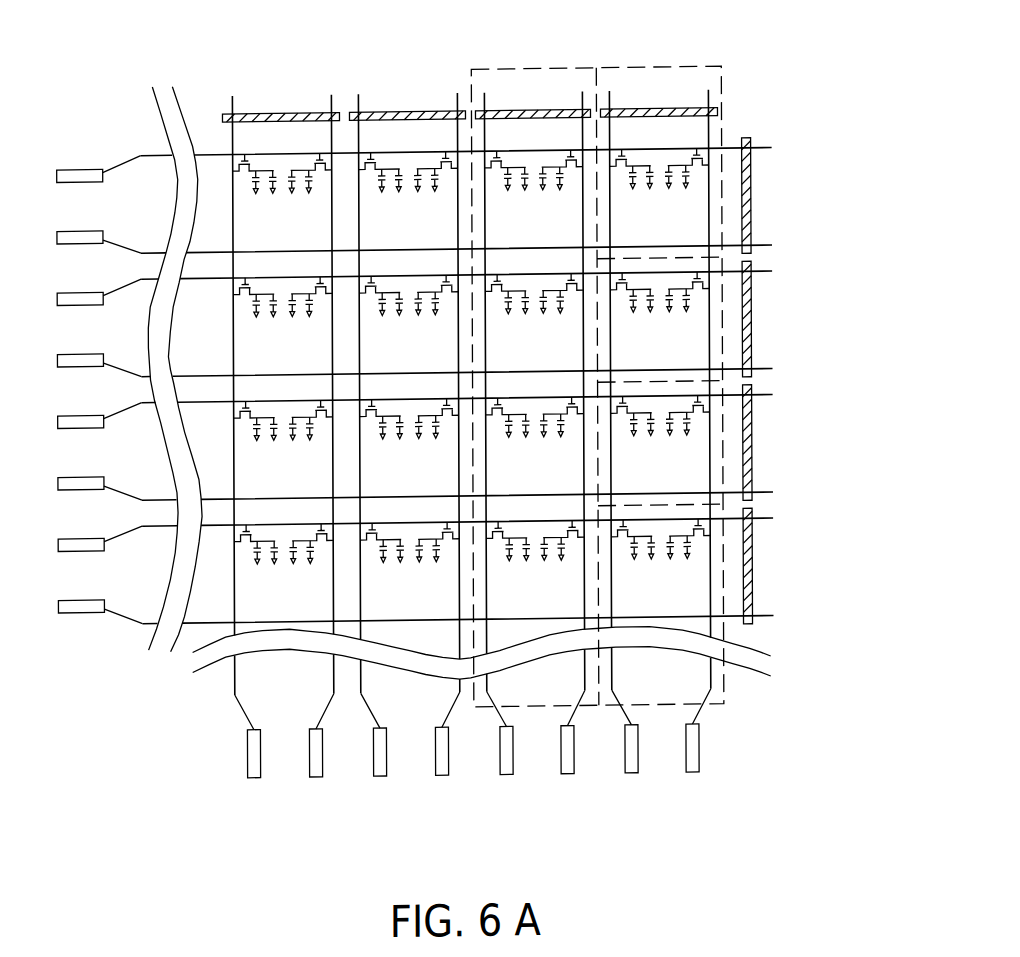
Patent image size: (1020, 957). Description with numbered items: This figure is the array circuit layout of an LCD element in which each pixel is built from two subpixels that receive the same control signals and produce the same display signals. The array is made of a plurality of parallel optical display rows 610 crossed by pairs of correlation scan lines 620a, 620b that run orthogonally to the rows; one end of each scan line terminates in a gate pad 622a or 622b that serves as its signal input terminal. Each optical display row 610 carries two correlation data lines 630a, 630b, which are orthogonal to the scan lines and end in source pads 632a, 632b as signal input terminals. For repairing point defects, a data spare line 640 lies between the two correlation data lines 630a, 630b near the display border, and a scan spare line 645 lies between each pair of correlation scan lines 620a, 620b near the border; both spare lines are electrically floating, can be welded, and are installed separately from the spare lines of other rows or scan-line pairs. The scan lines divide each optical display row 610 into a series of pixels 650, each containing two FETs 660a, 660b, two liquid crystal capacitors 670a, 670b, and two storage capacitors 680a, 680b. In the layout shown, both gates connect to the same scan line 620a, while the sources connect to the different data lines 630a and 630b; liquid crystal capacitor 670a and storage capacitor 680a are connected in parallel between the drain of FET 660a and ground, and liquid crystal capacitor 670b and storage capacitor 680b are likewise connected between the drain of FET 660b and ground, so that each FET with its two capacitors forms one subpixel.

The optical display row 610 is at (642, 74).
The data spare line 640 is at (507, 117).
The correlation scan line 620a is at (762, 157).
The correlation scan line 620b is at (752, 248).
The gate pad 622a is at (83, 170).
The gate pad 622b is at (83, 232).
The correlation data line 630a is at (483, 740).
The correlation data line 630b is at (575, 718).
The source pad 632a is at (502, 782).
The source pad 632b is at (568, 782).
The scan spare line 645 is at (752, 475).
The pixel 650 is at (705, 239).
The FET 660a is at (622, 541).
The FET 660b is at (697, 419).
The liquid crystal capacitor 670a is at (640, 556).
The liquid crystal capacitor 670b is at (680, 432).
The storage capacitor 680a is at (660, 556).
The storage capacitor 680b is at (662, 432).